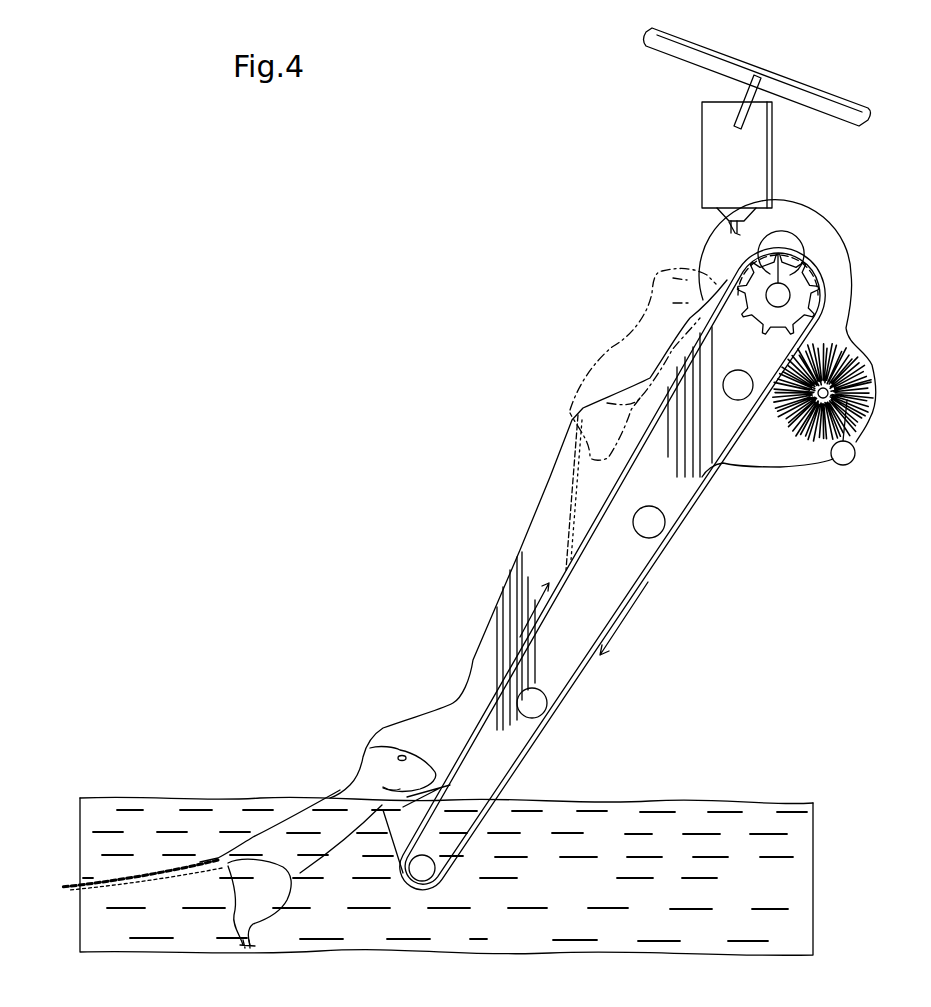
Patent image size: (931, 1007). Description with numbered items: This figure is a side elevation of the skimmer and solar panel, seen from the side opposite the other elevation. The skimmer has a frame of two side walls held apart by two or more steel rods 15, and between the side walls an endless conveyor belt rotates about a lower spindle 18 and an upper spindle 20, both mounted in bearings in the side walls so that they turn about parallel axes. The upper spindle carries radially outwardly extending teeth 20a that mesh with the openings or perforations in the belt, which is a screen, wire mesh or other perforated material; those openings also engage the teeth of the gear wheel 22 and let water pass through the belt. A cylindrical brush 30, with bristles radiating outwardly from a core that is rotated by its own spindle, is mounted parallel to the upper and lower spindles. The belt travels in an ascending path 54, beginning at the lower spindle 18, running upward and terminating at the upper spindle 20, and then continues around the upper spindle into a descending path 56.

The steel rods 15 is at (666, 524).
The lower spindle 18 is at (453, 857).
The upper spindle 20 is at (805, 238).
The teeth 20a is at (838, 282).
The gear wheel 22 is at (745, 256).
The cylindrical brush 30 is at (871, 356).
The ascending path 54 is at (523, 627).
The descending path 56 is at (627, 622).